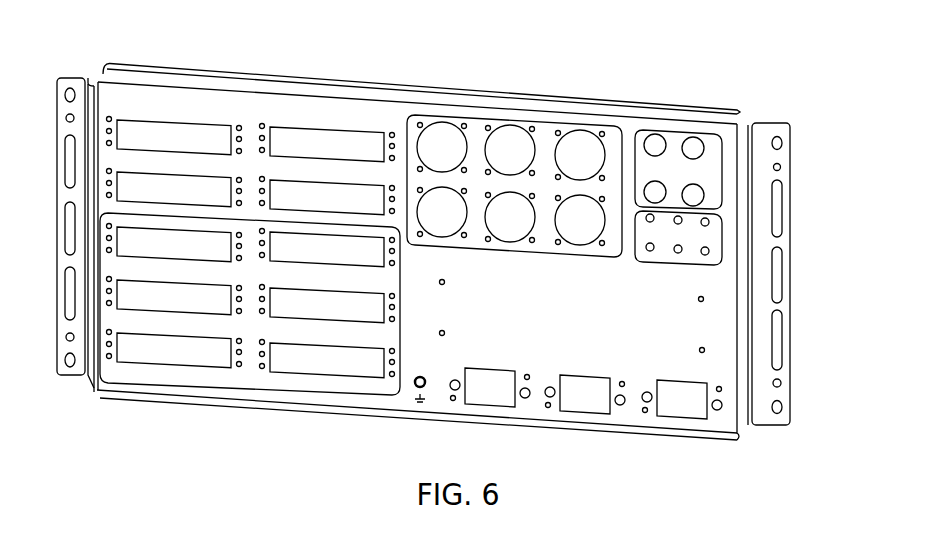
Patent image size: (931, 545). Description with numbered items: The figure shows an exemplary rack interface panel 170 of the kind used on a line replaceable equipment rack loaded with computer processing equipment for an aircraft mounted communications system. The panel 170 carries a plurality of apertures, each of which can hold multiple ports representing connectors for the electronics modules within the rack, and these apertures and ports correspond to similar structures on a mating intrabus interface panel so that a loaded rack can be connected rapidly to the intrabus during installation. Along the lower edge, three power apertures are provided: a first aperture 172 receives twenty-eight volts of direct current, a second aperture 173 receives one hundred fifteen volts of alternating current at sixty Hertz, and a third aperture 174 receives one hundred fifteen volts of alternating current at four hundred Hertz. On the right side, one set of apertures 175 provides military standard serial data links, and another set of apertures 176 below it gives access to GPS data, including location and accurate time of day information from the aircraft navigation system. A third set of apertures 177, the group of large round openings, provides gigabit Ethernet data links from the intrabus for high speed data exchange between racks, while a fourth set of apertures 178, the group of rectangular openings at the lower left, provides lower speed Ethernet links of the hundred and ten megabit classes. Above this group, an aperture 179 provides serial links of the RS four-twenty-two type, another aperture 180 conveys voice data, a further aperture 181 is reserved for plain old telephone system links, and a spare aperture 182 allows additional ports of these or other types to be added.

The rack interface panel 170 is at (729, 66).
The first aperture 172 is at (490, 387).
The second aperture 173 is at (585, 394).
The third aperture 174 is at (682, 399).
The set of apertures 175 is at (678, 169).
The set of apertures 176 is at (721, 268).
The third set of apertures 177 is at (405, 245).
The fourth set of apertures 178 is at (402, 390).
The aperture 179 is at (174, 136).
The aperture 180 is at (174, 188).
The third aperture 181 is at (327, 143).
The spare aperture 182 is at (327, 196).